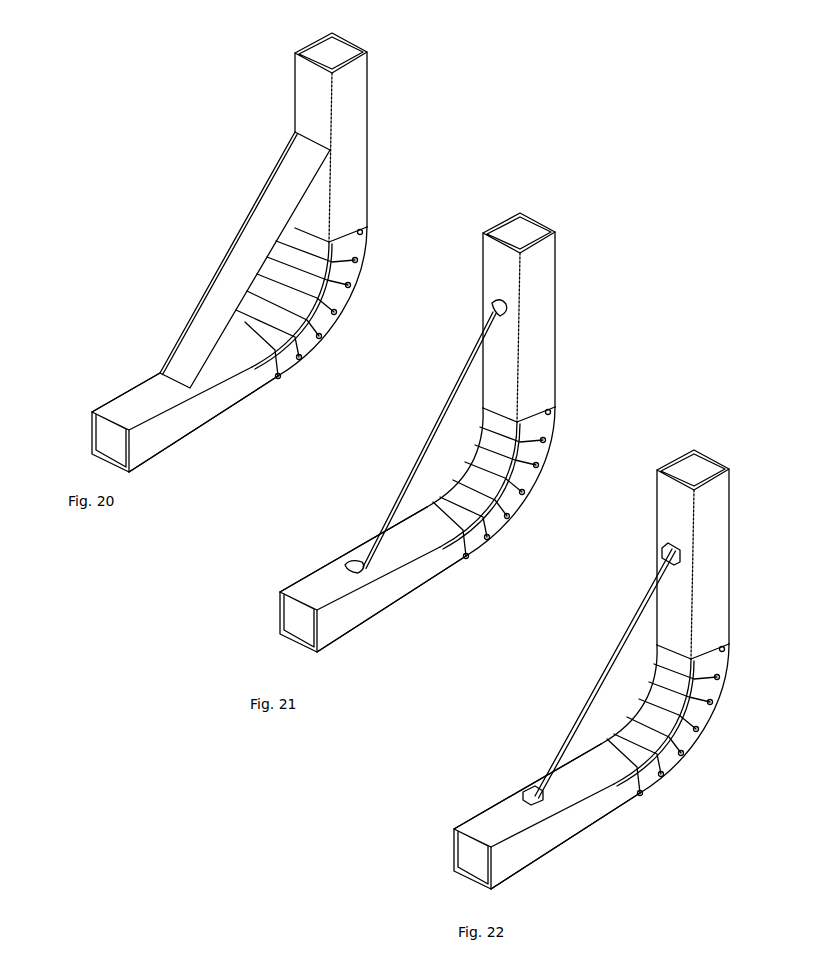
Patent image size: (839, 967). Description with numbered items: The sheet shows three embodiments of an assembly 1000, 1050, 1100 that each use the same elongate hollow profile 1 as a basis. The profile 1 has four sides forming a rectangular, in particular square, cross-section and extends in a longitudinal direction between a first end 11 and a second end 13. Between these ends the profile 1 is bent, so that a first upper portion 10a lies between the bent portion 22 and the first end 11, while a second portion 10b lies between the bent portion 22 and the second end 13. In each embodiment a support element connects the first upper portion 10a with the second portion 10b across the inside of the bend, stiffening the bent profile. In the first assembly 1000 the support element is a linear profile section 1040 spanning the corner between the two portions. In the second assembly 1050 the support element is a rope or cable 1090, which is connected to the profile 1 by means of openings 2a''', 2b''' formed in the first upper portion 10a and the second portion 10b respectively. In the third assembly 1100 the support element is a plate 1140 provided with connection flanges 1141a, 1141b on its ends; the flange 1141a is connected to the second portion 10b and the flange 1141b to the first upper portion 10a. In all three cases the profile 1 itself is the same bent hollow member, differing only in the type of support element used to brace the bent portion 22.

In FIG. 20, the elongate hollow profile 1 is at (185, 422).
In FIG. 21, the elongate hollow profile 1 is at (312, 592).
In FIG. 22, the elongate hollow profile 1 is at (547, 816).
In FIG. 20, the first upper portion 10a is at (331, 147).
In FIG. 21, the first upper portion 10a is at (538, 370).
In FIG. 22, the first upper portion 10a is at (693, 564).
In FIG. 20, the second portion 10b is at (185, 419).
In FIG. 21, the second portion 10b is at (383, 597).
In FIG. 22, the second portion 10b is at (547, 816).
In FIG. 20, the first end 11 is at (331, 53).
In FIG. 21, the first end 11 is at (545, 226).
In FIG. 22, the first end 11 is at (693, 470).
In FIG. 20, the second end 13 is at (110, 442).
In FIG. 21, the second end 13 is at (290, 640).
In FIG. 22, the second end 13 is at (472, 859).
In FIG. 20, the bent portion 22 is at (301, 303).
In FIG. 21, the bent portion 22 is at (522, 477).
In FIG. 22, the bent portion 22 is at (665, 720).
In FIG. 20, the assembly 1000 is at (210, 190).
In FIG. 20, the linear profile section 1040 is at (245, 260).
In FIG. 21, the assembly 1050 is at (574, 324).
In FIG. 21, the rope/cable 1090 is at (437, 417).
In FIG. 21, the opening 2a''' is at (465, 280).
In FIG. 21, the opening 2b''' is at (341, 518).
In FIG. 21, the assembly 1100 is at (543, 641).
In FIG. 22, the plate 1140 is at (620, 710).
In FIG. 22, the connection flange 1141a is at (537, 795).
In FIG. 22, the connection flange 1141b is at (662, 555).